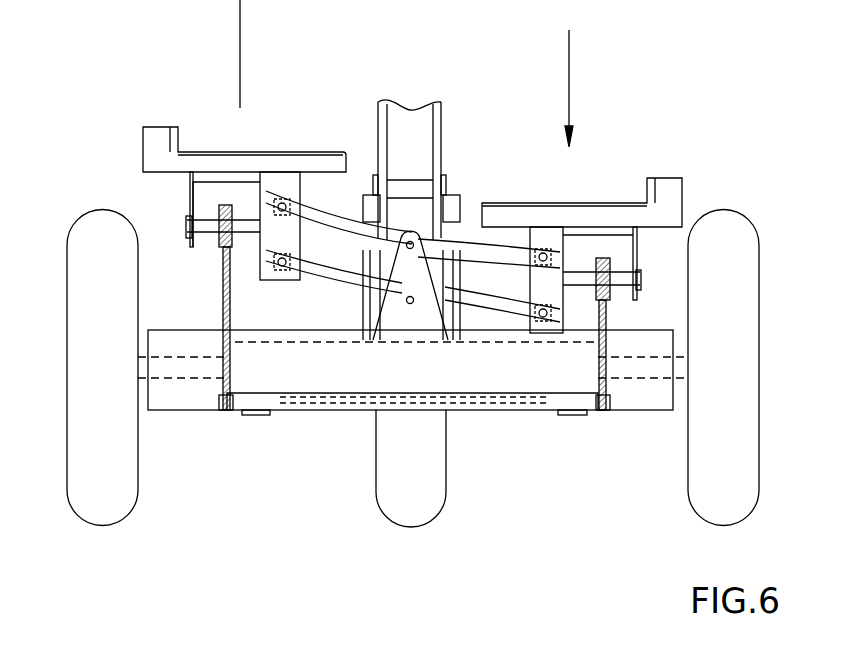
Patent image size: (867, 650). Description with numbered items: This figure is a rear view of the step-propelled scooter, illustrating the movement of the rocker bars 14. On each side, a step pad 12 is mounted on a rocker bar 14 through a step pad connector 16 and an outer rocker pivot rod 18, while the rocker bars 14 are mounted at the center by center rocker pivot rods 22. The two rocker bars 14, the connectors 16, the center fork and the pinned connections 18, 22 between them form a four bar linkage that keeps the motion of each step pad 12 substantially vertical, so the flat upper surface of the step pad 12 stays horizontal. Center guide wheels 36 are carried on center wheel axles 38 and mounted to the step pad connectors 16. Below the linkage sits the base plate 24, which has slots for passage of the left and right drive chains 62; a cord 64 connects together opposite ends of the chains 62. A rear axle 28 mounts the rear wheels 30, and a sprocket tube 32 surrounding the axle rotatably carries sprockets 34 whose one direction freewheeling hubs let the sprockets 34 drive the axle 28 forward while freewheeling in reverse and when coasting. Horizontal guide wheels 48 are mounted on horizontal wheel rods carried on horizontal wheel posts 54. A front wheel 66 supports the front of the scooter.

The step pad 12 is at (156, 134).
The rocker bar 14 is at (345, 287).
The step pad connector 16 is at (189, 177).
The outer rocker pivot rod 18 is at (298, 203).
The center rocker pivot rod 22 is at (432, 223).
The base plate 24 is at (160, 333).
The rear axle 28 is at (140, 405).
The rear wheel 30 is at (80, 223).
The sprocket tube 32 is at (437, 408).
The sprocket 34 is at (203, 413).
The center guide wheel 36 is at (242, 213).
The center wheel axle 38 is at (210, 230).
The horizontal guide wheel 48 is at (258, 392).
The horizontal wheel post 54 is at (247, 413).
The drive chain 62 is at (223, 280).
The cord 64 is at (366, 408).
The front wheel 66 is at (413, 513).